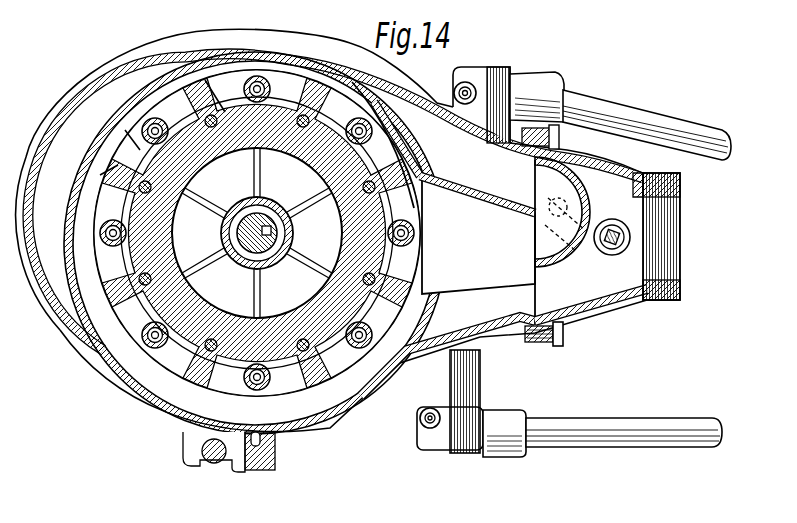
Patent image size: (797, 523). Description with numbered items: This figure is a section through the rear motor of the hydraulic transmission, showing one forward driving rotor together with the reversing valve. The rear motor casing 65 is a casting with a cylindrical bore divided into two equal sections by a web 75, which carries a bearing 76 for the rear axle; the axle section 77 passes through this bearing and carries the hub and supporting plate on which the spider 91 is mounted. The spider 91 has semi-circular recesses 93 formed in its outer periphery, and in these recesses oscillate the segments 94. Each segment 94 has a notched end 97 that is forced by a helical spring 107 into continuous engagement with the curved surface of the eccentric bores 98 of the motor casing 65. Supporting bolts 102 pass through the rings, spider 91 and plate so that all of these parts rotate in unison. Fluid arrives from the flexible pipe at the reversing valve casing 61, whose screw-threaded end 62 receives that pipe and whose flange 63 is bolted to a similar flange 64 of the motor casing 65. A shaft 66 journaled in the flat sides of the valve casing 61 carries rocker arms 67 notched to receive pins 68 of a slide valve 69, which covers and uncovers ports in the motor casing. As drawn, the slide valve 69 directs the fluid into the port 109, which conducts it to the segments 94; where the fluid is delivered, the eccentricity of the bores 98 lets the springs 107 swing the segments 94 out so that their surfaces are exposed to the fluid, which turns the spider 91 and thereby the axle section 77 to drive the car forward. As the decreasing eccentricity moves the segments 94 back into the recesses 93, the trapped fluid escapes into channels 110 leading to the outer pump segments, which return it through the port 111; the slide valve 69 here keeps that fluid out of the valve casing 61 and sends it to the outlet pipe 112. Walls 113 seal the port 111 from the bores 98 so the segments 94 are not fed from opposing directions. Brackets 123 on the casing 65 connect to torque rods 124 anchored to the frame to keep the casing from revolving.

The reversing valve casing 61 is at (596, 167).
The end of valve casing 62 is at (681, 192).
The flange of valve casing 63 is at (546, 347).
The flange of motor casing 64 is at (530, 345).
The rear motor casing 65 is at (170, 418).
The shaft 66 is at (610, 246).
The rocker arms 67 is at (604, 224).
The pins 68 is at (554, 203).
The slide valve 69 is at (586, 196).
The web 75 is at (282, 222).
The bearing 76 is at (285, 243).
The axle section 77 is at (248, 233).
The spider 91 is at (213, 143).
The semi-circular recesses 93 is at (257, 233).
The segments 94 is at (157, 300).
The notched end 97 is at (217, 98).
The eccentric bores 98 is at (108, 180).
The supporting bolts 102 is at (255, 243).
The helical spring 107 is at (153, 122).
The port 109 is at (387, 361).
The channels 110 is at (348, 230).
The port 111 is at (477, 183).
The outlet pipe 112 is at (478, 236).
The walls 113 is at (386, 117).
The brackets 123 is at (451, 110).
The torque rods 124 is at (656, 116).